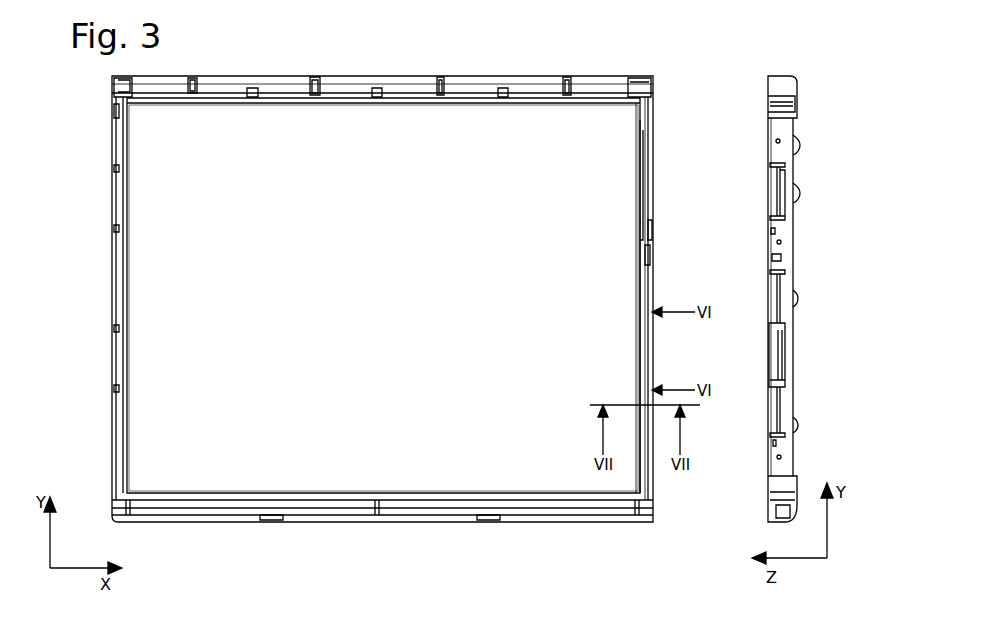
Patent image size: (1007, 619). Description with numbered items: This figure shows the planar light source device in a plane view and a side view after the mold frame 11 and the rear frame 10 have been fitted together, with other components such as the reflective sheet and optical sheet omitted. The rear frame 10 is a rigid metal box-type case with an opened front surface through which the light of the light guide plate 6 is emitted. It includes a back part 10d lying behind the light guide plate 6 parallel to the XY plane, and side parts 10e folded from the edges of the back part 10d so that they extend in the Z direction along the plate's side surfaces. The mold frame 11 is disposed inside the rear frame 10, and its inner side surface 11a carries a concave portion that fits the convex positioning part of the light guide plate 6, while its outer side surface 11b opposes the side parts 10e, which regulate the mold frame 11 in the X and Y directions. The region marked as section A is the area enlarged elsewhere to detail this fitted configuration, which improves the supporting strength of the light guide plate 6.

The light guide plate 6 is at (628, 134).
The rear frame 10 is at (790, 320).
The back part 10d is at (793, 400).
The side parts 10e is at (655, 228).
The mold frame 11 is at (655, 188).
The inner side surface 11a is at (638, 242).
The outer side surface 11b is at (655, 258).
The section A is at (797, 347).